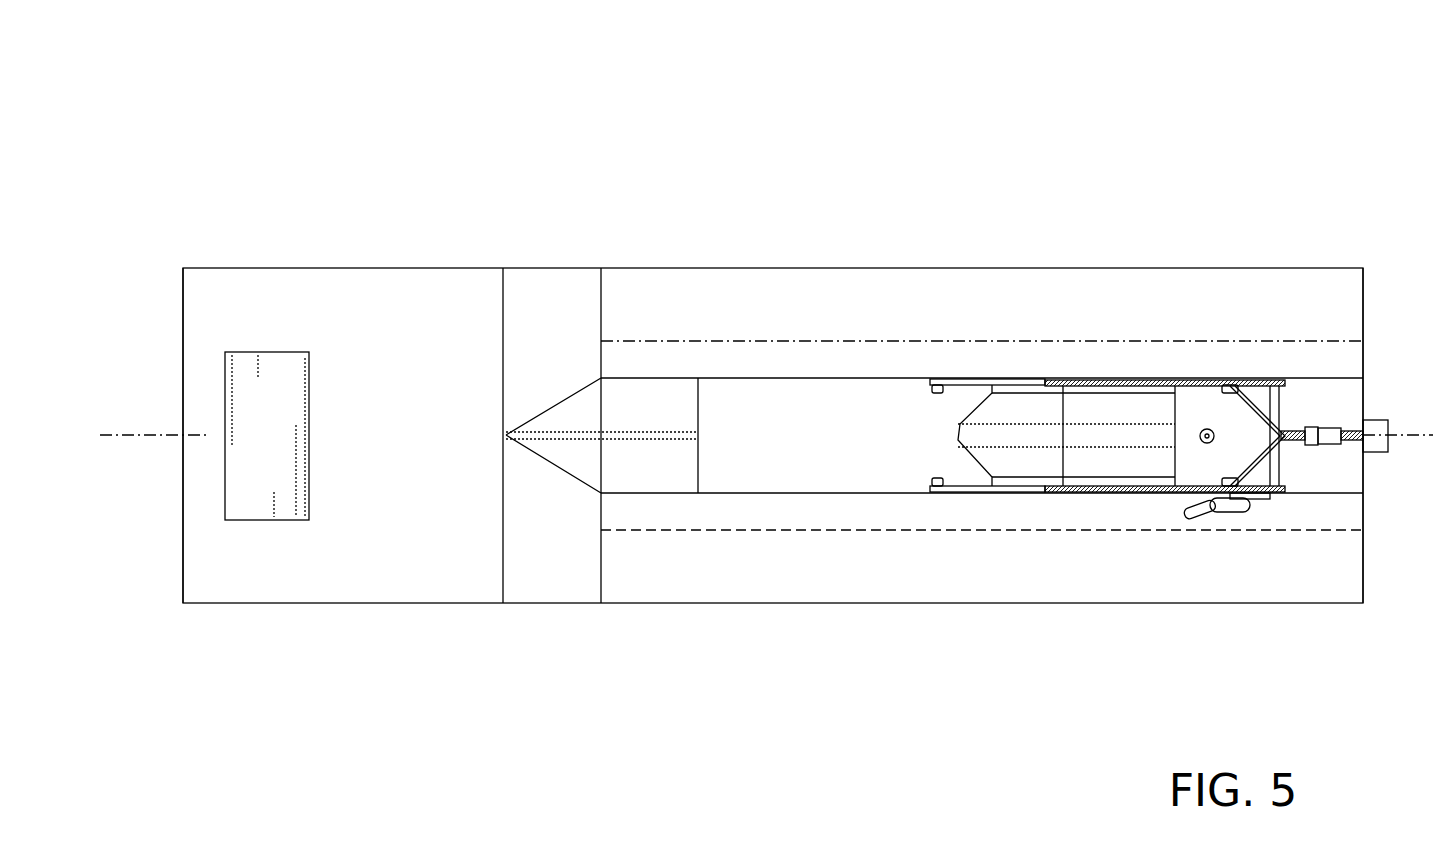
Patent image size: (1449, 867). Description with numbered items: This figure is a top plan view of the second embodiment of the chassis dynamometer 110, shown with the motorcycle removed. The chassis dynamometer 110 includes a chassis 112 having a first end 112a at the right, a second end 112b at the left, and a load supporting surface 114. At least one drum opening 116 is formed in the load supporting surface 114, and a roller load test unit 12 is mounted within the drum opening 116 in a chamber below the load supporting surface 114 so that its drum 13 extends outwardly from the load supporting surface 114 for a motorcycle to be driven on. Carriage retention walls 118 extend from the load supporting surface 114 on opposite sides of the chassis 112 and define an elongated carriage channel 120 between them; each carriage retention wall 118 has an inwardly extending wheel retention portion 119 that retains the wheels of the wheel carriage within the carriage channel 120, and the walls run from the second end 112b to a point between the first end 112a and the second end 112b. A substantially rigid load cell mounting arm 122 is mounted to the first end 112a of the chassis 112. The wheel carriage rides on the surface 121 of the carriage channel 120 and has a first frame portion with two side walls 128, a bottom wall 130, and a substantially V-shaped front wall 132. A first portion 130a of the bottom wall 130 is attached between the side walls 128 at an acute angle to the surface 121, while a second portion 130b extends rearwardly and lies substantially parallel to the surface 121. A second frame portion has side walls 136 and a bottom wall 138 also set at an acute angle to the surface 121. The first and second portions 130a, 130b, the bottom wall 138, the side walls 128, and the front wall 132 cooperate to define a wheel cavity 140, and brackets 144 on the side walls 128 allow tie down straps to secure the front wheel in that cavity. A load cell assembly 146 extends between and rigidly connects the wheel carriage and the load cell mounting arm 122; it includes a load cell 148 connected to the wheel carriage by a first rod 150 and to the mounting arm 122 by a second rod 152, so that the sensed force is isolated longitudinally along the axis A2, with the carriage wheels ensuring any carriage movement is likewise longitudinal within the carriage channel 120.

The chassis dynamometer 110 is at (305, 142).
The chassis 112 is at (805, 268).
The first end 112a is at (1322, 577).
The second end 112b is at (204, 580).
The load supporting surface 114 is at (433, 435).
The drum opening 116 is at (308, 383).
The roller load test unit 12 is at (204, 337).
The drum 13 is at (233, 405).
The carriage retention walls 118 is at (915, 292).
The wheel retention portion 119 is at (633, 367).
The carriage channel 120 is at (736, 404).
The surface of the carriage channel 121 is at (805, 435).
The load cell mounting arm 122 is at (1377, 420).
The side walls 128 is at (1176, 380).
The bottom wall 130 is at (1101, 500).
The first portion 130a is at (1195, 410).
The second portion 130b is at (1122, 410).
The front wall 132 is at (1262, 403).
The side walls 136 is at (1020, 380).
The bottom wall 138 is at (985, 433).
The wheel cavity 140 is at (1065, 415).
The brackets 144 is at (1222, 513).
The load cell assembly 146 is at (1340, 390).
The load cell 148 is at (1322, 445).
The first rod 150 is at (1293, 442).
The second rod 152 is at (1352, 445).
The axis A2 is at (1403, 434).